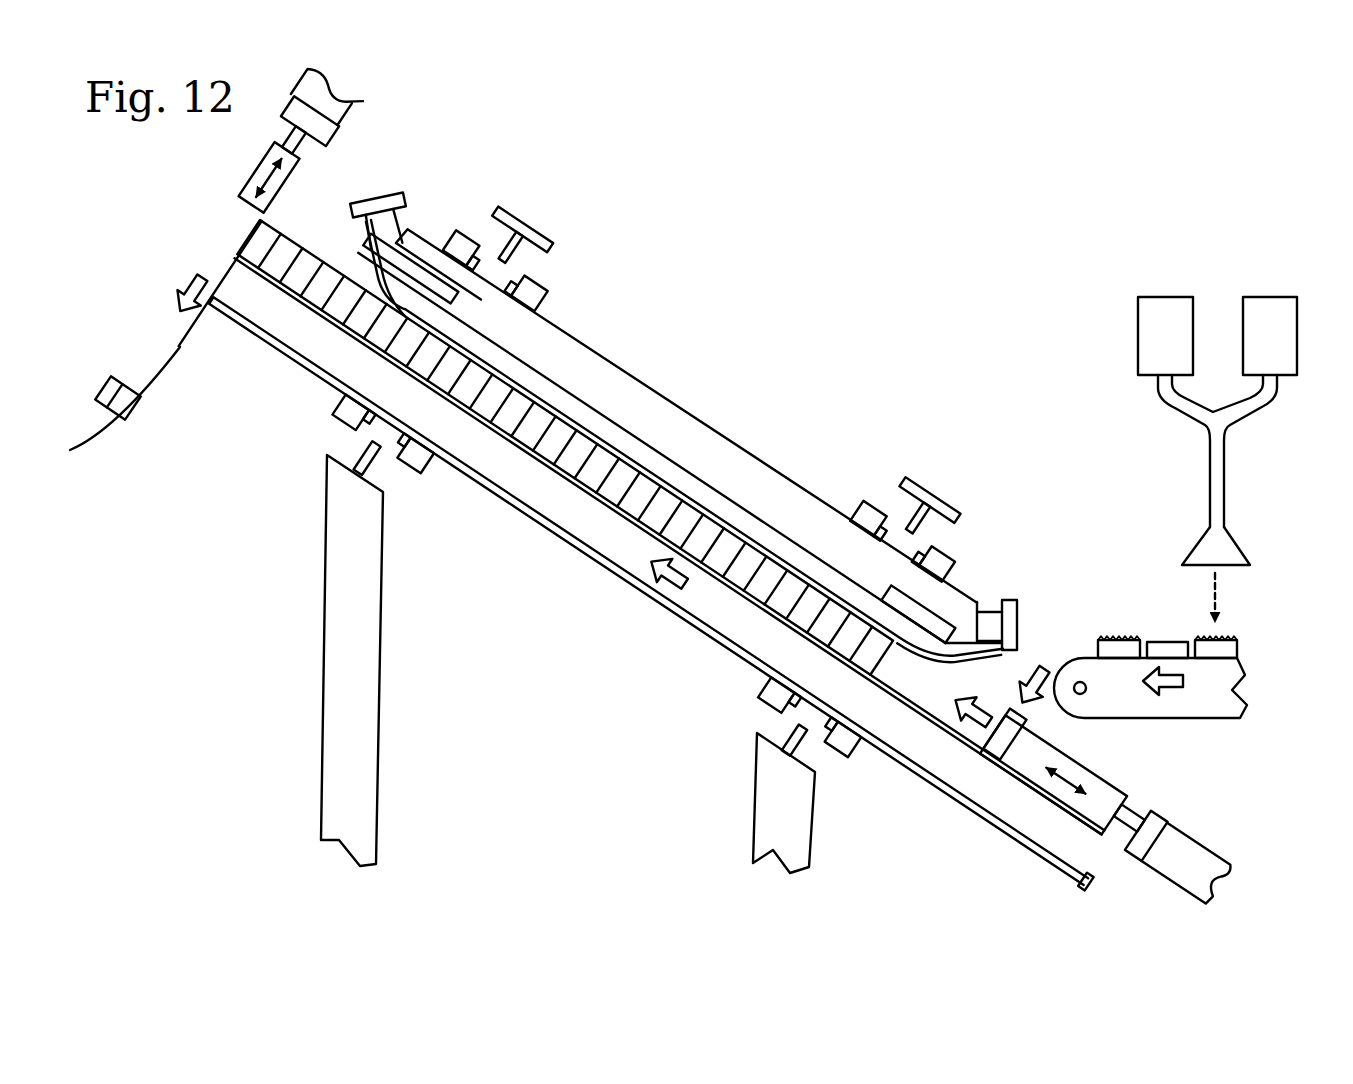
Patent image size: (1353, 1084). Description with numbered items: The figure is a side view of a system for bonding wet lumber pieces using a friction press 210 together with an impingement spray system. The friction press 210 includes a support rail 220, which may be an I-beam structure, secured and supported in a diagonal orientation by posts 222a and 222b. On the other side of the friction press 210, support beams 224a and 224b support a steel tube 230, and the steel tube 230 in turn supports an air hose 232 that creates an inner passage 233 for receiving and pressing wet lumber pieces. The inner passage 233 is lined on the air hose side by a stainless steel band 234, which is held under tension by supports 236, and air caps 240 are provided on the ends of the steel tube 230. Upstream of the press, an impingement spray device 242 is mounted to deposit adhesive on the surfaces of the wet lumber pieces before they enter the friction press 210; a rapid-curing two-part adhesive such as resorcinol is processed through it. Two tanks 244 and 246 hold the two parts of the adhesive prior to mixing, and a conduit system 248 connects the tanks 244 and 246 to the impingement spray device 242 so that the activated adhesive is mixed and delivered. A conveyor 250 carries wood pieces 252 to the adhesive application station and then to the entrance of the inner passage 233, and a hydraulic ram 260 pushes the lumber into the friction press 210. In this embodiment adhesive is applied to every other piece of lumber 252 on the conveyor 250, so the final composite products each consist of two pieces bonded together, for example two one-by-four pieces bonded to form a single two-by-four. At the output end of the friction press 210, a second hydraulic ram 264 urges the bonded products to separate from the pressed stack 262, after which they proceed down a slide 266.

The friction press 210 is at (932, 199).
The support rail 220 is at (997, 787).
The post 222a is at (368, 697).
The post 222b is at (767, 813).
The support beam 224a is at (525, 225).
The support beam 224b is at (935, 518).
The steel tube 230 is at (650, 388).
The air hose 232 is at (540, 387).
The inner passage 233 is at (895, 661).
The stainless steel band 234 is at (688, 492).
The support 236 is at (447, 292).
The air cap 240 is at (1018, 615).
The impingement spray device 242 is at (1207, 540).
The tank 244 is at (1150, 296).
The tank 246 is at (1262, 296).
The conduit system 248 is at (1205, 462).
The conveyor 250 is at (1127, 698).
The wood piece 252 is at (1112, 652).
The hydraulic ram 260 is at (1175, 848).
The pressed stack 262 is at (737, 577).
The second hydraulic ram 264 is at (340, 117).
The slide 266 is at (190, 362).